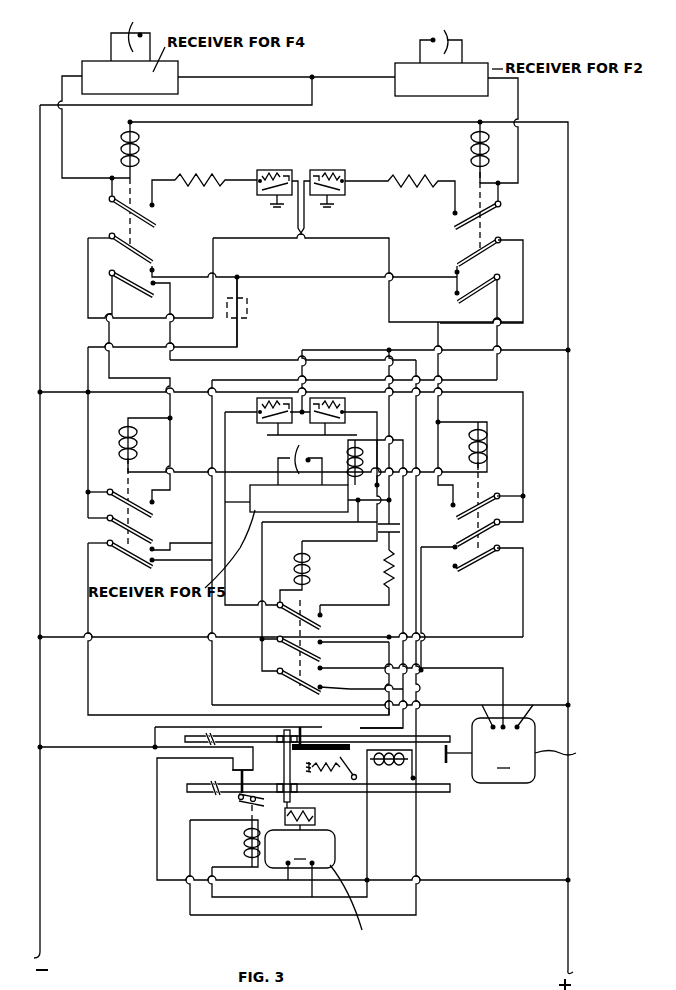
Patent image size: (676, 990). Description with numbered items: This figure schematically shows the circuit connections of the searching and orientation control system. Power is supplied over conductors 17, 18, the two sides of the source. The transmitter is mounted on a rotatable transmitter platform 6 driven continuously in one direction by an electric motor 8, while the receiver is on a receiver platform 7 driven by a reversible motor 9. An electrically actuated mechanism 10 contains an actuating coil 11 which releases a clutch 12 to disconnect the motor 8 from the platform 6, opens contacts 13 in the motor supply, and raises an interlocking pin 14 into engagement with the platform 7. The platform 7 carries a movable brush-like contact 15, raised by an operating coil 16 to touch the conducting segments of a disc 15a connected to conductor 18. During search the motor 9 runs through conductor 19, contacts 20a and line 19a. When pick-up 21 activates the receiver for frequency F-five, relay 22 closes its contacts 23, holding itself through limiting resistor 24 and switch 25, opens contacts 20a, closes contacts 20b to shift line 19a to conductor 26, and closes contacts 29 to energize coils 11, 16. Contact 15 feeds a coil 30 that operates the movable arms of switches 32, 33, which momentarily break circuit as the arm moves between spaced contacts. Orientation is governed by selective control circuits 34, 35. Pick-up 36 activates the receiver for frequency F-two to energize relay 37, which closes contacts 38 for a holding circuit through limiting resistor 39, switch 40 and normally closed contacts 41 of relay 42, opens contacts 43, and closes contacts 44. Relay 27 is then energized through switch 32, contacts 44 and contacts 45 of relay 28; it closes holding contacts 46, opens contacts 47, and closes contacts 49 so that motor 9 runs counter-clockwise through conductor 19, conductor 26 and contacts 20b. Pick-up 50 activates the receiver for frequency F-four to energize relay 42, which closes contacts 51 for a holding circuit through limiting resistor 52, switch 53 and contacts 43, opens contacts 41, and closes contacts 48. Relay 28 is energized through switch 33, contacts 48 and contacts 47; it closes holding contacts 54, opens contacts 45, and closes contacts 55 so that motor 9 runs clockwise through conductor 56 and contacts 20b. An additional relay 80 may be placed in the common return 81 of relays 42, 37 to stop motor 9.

The selective control circuit 35 is at (82, 57).
The pick-up 50 is at (141, 33).
The selective control circuit 34 is at (484, 63).
The pick-up 36 is at (455, 38).
The relay 42 is at (140, 145).
The contacts 51 is at (153, 206).
The limiting resistor 52 is at (196, 177).
The switch 53 is at (275, 171).
The switch 40 is at (331, 171).
The limiting resistor 39 is at (410, 178).
The contacts 38 is at (454, 214).
The relay 37 is at (472, 142).
The normally closed contacts 43 is at (456, 270).
The contacts 44 is at (454, 296).
The normally closed contacts 41 is at (154, 269).
The contacts 48 is at (155, 291).
The additional relay 80 is at (248, 307).
The common return 81 is at (240, 332).
The switch 33 is at (257, 406).
The switch 32 is at (345, 404).
The relay 28 is at (136, 440).
The relay 27 is at (470, 446).
The pick-up 21 is at (288, 452).
The coil 30 is at (351, 460).
The contacts 54 is at (154, 502).
The contacts 45 is at (154, 548).
The contacts 55 is at (155, 562).
The line 19a is at (112, 637).
The switch 25 is at (378, 528).
The limiting resistor 24 is at (384, 568).
The relay 22 is at (298, 568).
The contacts 23 is at (322, 615).
The contacts 20b is at (322, 642).
The contacts 20a is at (322, 668).
The conductor 19 is at (472, 669).
The contacts 29 is at (322, 688).
The contacts 46 is at (453, 506).
The contacts 47 is at (455, 547).
The contacts 49 is at (455, 567).
The conductor 26 is at (453, 634).
The conductor 56 is at (447, 705).
The motor 9 is at (555, 744).
The receiver platform 7 is at (428, 737).
The transmitter platform 6 is at (381, 788).
The disc 15a is at (302, 729).
The movable brush-like contact 15 is at (340, 757).
The interlocking pin 14 is at (284, 765).
The contacts 13 is at (232, 770).
The electrically actuated mechanism 10 is at (253, 801).
The actuating coil 11 is at (246, 843).
The clutch 12 is at (316, 816).
The electric motor 8 is at (374, 900).
The operating coil 16 is at (375, 766).
The conductor 18 is at (26, 953).
The conductor 17 is at (583, 963).